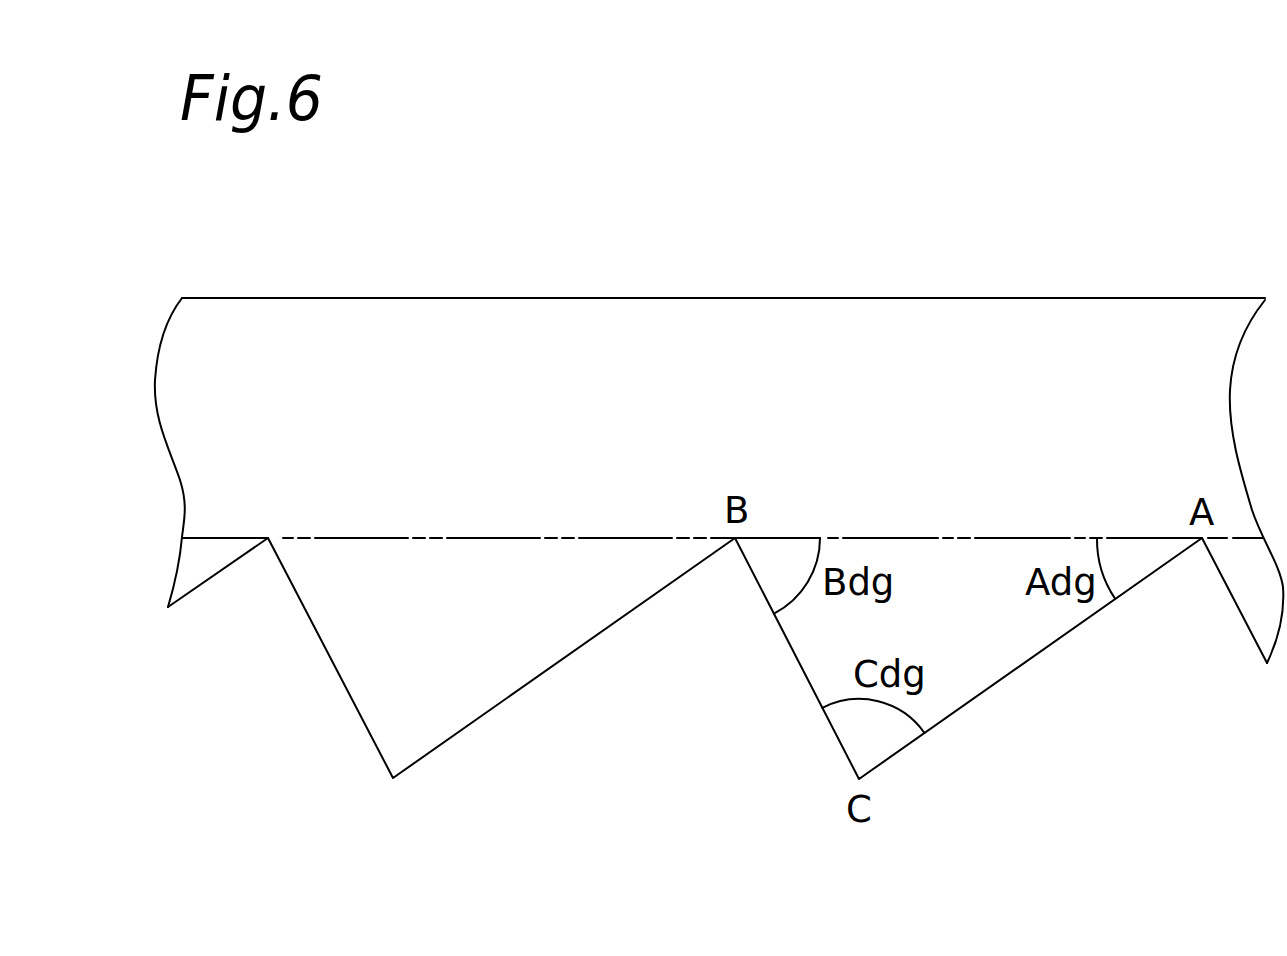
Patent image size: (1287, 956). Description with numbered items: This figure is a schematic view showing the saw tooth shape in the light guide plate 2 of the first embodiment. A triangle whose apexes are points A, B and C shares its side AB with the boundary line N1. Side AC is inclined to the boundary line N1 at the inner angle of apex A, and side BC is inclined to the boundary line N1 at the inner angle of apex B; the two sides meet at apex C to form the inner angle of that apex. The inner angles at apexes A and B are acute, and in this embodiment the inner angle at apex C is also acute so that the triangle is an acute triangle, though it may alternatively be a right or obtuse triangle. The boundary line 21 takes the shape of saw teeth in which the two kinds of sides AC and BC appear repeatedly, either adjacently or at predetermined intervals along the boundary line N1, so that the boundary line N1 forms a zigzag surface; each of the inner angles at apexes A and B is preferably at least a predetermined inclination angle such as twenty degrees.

The light guide plate 2 is at (697, 347).
The boundary line 21 is at (353, 700).
The boundary line N1 is at (222, 535).